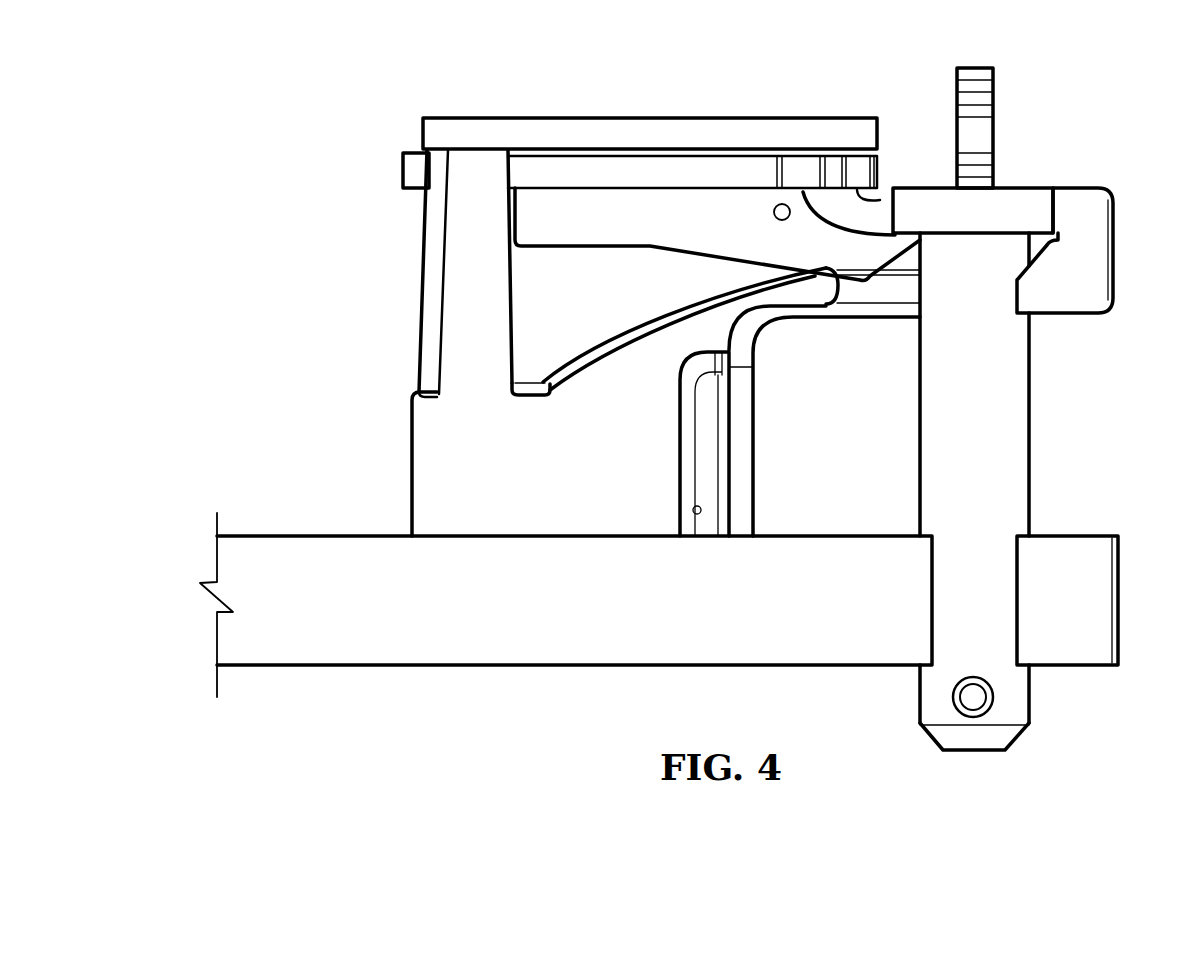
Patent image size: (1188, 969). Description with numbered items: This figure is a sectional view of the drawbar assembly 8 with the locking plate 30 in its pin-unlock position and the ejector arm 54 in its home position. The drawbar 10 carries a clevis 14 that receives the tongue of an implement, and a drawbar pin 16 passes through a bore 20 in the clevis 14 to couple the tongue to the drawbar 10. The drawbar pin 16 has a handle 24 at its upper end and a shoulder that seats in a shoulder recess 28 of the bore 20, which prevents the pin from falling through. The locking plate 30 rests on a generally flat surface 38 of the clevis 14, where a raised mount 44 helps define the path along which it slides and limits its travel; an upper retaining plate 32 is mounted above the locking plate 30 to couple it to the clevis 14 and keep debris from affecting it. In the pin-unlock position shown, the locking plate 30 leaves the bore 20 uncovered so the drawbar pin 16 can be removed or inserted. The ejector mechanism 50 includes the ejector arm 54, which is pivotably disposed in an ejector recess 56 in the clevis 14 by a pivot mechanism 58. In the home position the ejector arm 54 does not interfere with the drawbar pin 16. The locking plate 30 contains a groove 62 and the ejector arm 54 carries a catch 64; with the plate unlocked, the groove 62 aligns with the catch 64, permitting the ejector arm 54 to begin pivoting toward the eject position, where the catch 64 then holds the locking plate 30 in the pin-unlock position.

The drawbar assembly 8 is at (510, 705).
The drawbar 10 is at (748, 665).
The clevis 14 is at (577, 453).
The drawbar pin 16 is at (1005, 435).
The bore 20 is at (1027, 247).
The handle 24 is at (993, 95).
The shoulder recess 28 is at (1060, 208).
The locking plate 30 is at (408, 168).
The upper retaining plate 32 is at (568, 128).
The flat surface 38 is at (882, 193).
The raised mount 44 is at (490, 148).
The ejector mechanism 50 is at (330, 292).
The ejector arm 54 is at (657, 231).
The ejector recess 56 is at (599, 308).
The pivot mechanism 58 is at (773, 214).
The groove 62 is at (782, 176).
The catch 64 is at (828, 180).